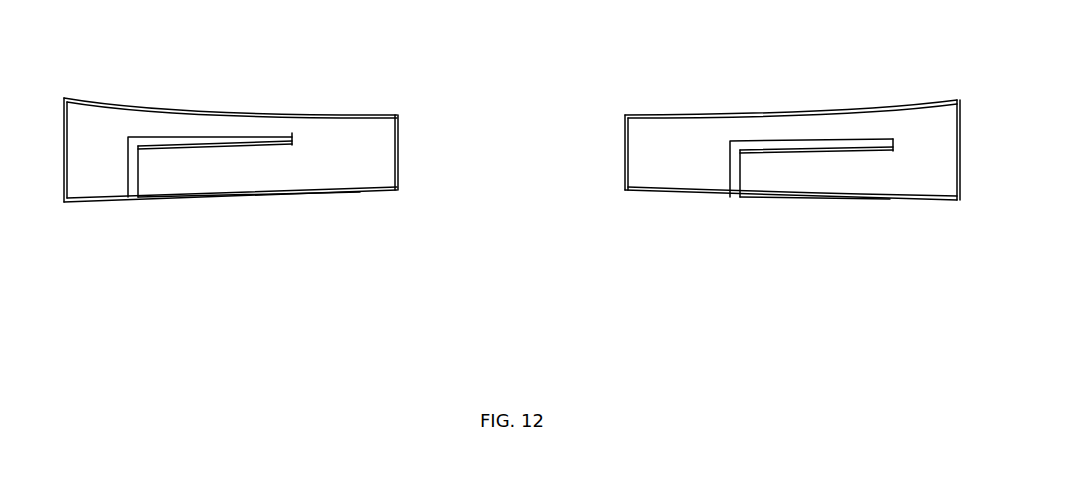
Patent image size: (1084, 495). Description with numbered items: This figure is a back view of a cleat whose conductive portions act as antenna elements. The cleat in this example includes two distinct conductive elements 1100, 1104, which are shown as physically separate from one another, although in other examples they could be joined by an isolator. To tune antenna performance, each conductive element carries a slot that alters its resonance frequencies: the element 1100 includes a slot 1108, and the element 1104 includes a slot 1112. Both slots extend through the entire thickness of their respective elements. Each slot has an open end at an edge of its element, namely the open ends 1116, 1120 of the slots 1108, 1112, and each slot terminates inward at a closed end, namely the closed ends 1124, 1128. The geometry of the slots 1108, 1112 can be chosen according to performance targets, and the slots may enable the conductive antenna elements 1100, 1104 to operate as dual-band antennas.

The conductive element 1100 is at (342, 115).
The conductive element 1104 is at (698, 113).
The slot 1108 is at (175, 147).
The slot 1112 is at (787, 152).
The open end 1116 is at (133, 200).
The open end 1120 is at (738, 195).
The closed end 1124 is at (292, 144).
The closed end 1128 is at (893, 150).